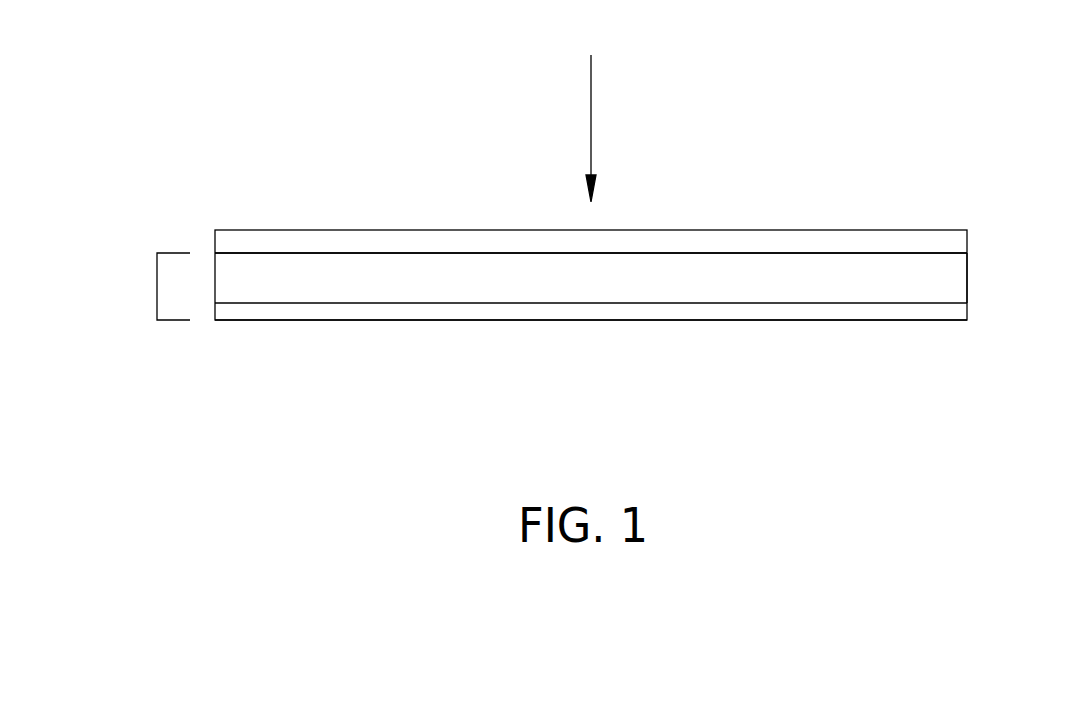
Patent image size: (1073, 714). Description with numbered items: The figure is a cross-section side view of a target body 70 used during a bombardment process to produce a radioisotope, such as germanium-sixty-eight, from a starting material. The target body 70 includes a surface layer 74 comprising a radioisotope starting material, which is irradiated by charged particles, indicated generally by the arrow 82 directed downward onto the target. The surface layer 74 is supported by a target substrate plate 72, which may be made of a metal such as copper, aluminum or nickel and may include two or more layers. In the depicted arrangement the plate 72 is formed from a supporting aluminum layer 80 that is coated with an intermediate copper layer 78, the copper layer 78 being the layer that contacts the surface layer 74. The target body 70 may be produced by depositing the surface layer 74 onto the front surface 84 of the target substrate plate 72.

The target body 70 is at (443, 128).
The target substrate plate 72 is at (156, 285).
The surface layer 74 is at (213, 233).
The intermediate copper layer 78 is at (967, 274).
The supporting aluminum layer 80 is at (968, 310).
The charged particles 82 is at (591, 110).
The front surface 84 is at (724, 252).